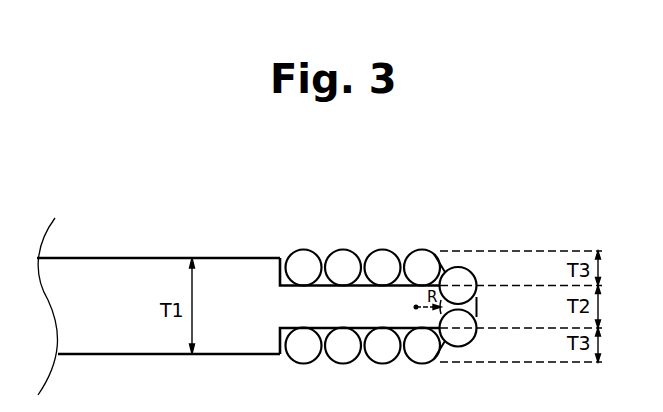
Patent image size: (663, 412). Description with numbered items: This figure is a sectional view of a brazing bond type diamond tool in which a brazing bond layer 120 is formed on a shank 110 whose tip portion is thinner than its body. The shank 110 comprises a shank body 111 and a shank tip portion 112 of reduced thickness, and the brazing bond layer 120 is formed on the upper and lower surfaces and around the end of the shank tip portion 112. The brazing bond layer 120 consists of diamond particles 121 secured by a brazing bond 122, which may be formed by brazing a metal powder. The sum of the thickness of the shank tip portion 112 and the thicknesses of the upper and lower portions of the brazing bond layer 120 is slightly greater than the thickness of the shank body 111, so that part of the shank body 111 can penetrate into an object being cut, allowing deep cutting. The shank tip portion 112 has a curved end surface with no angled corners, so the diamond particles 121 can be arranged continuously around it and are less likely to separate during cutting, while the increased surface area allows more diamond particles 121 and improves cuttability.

The shank 110 is at (273, 164).
The shank body 111 is at (135, 273).
The shank tip portion 112 is at (323, 300).
The brazing bond layer 120 is at (437, 164).
The diamond particles 121 is at (422, 266).
The brazing bond 122 is at (363, 264).